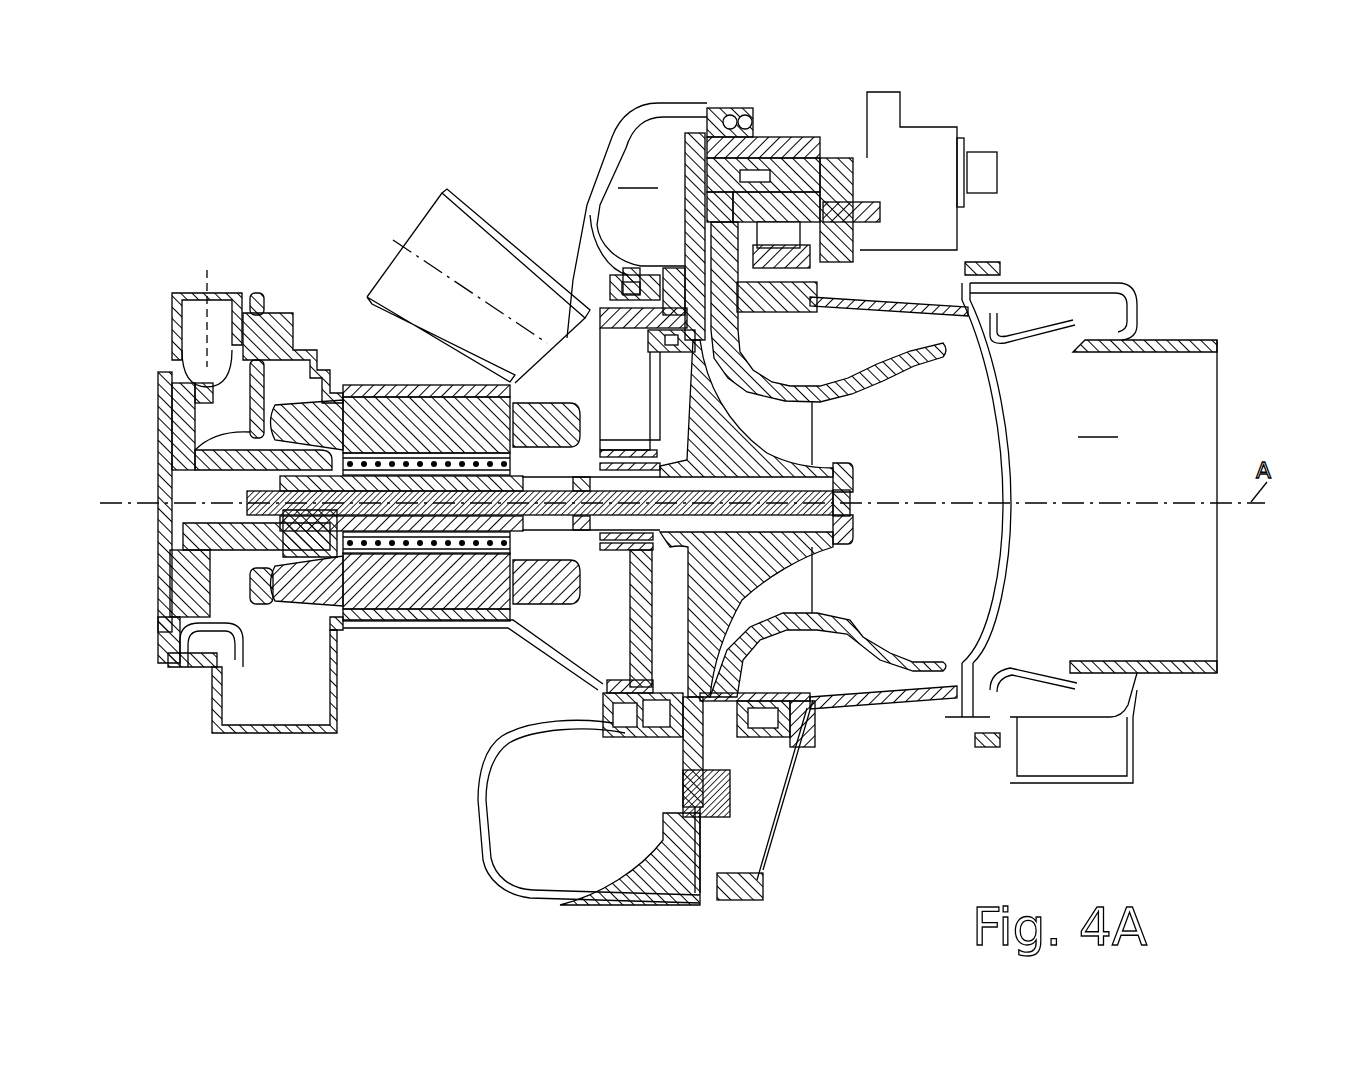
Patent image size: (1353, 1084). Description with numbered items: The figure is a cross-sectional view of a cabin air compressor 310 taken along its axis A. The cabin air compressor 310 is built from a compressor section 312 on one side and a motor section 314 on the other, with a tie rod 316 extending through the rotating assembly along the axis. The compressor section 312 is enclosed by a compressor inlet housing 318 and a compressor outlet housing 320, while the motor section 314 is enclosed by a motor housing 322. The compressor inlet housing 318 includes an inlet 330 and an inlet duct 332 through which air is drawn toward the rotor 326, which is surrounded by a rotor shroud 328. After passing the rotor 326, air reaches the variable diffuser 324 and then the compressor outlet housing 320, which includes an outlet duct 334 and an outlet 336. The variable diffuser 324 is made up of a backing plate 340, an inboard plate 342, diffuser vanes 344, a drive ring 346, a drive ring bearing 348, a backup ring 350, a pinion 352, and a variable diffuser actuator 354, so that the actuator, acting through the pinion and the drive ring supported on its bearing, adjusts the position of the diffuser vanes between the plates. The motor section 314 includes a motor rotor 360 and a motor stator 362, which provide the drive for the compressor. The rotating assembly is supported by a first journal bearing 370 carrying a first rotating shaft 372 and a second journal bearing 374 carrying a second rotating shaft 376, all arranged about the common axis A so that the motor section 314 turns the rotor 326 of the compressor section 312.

The cabin air compressor 310 is at (141, 88).
The compressor section 312 is at (1117, 91).
The motor section 314 is at (250, 440).
The tie rod 316 is at (420, 600).
The compressor inlet housing 318 is at (1135, 333).
The compressor outlet housing 320 is at (537, 219).
The motor housing 322 is at (350, 387).
The variable diffuser 324 is at (752, 852).
The rotor 326 is at (730, 562).
The rotor shroud 328 is at (845, 395).
The inlet 330 is at (1222, 410).
The inlet duct 332 is at (1099, 424).
The outlet duct 334 is at (623, 143).
The outlet 336 is at (548, 822).
The backing plate 340 is at (668, 758).
The inboard plate 342 is at (657, 898).
The diffuser vanes 344 is at (698, 893).
The drive ring 346 is at (747, 803).
The drive ring bearing 348 is at (786, 740).
The backup ring 350 is at (815, 725).
The pinion 352 is at (783, 207).
The variable diffuser actuator 354 is at (928, 148).
The motor rotor 360 is at (370, 562).
The motor stator 362 is at (420, 563).
The first journal bearing 370 is at (593, 445).
The first rotating shaft 372 is at (583, 548).
The second journal bearing 374 is at (225, 449).
The second rotating shaft 376 is at (235, 473).